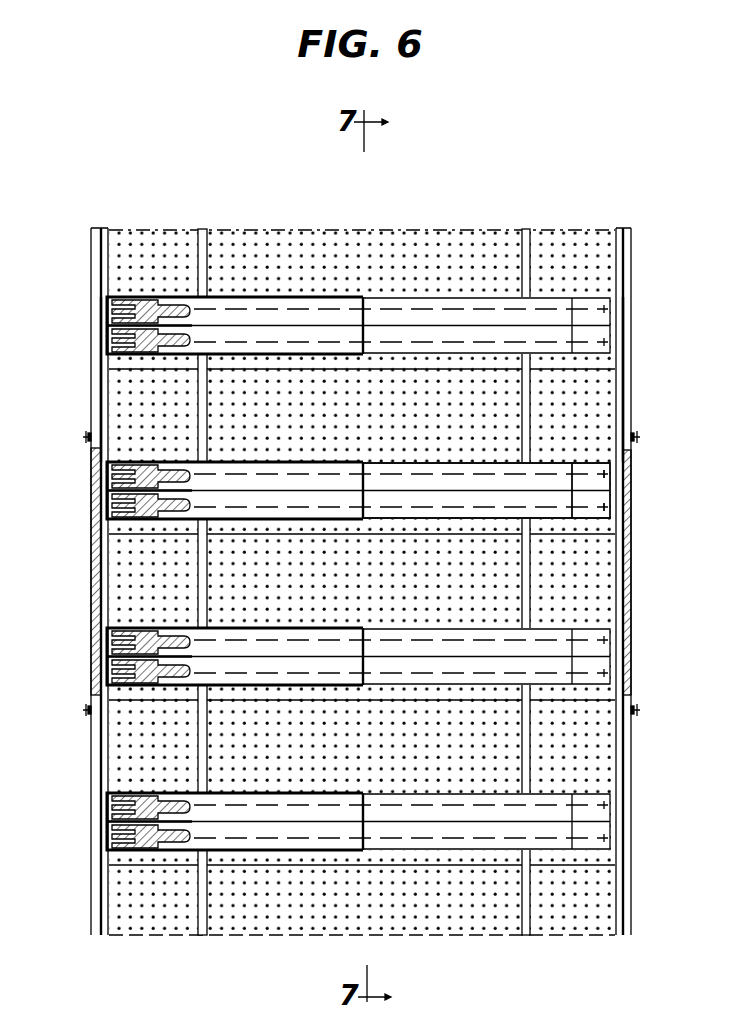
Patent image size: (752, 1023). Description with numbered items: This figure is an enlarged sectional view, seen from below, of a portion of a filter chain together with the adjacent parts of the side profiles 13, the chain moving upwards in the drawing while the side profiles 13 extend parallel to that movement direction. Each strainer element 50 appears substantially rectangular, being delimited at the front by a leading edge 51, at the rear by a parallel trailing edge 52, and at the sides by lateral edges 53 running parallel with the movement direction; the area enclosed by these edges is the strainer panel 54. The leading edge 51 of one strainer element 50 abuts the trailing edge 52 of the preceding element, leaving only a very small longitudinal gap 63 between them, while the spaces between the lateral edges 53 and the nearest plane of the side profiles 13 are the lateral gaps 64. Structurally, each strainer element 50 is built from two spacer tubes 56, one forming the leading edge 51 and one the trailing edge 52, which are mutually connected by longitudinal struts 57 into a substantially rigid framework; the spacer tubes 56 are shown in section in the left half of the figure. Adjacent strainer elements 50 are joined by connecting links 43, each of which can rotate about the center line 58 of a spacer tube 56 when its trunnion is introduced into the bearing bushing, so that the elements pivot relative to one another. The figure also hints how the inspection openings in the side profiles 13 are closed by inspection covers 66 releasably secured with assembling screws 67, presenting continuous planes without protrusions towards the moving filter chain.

The side profile 13 is at (100, 313).
The connecting link 43 is at (155, 300).
The strainer element 50 is at (256, 380).
The leading edge 51 is at (493, 323).
The trailing edge 52 is at (493, 490).
The lateral edge 53 is at (108, 413).
The strainer panel 54 is at (278, 410).
The spacer tube 56 is at (392, 297).
The longitudinal strut 57 is at (204, 378).
The center line 58 is at (441, 309).
The longitudinal gap 63 is at (555, 470).
The lateral gap 64 is at (96, 224).
The inspection cover 66 is at (92, 531).
The assembling screw 67 is at (86, 445).